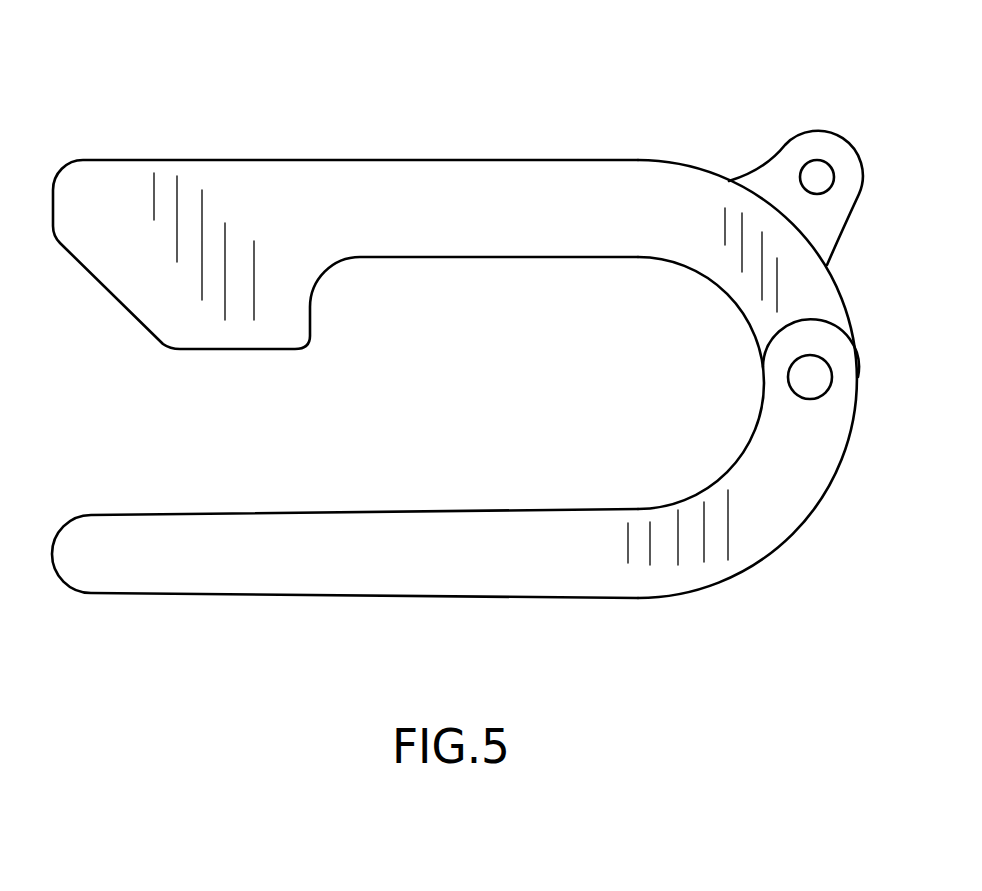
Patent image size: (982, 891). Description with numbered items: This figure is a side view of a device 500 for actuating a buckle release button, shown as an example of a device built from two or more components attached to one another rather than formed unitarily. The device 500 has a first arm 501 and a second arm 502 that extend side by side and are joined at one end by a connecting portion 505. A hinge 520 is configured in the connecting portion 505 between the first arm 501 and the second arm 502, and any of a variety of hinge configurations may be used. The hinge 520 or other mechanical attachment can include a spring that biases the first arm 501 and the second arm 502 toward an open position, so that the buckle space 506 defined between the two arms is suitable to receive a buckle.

The device 500 is at (106, 110).
The first arm 501 is at (325, 173).
The second arm 502 is at (325, 582).
The connecting portion 505 is at (802, 505).
The buckle space 506 is at (162, 424).
The hinge 520 is at (817, 377).